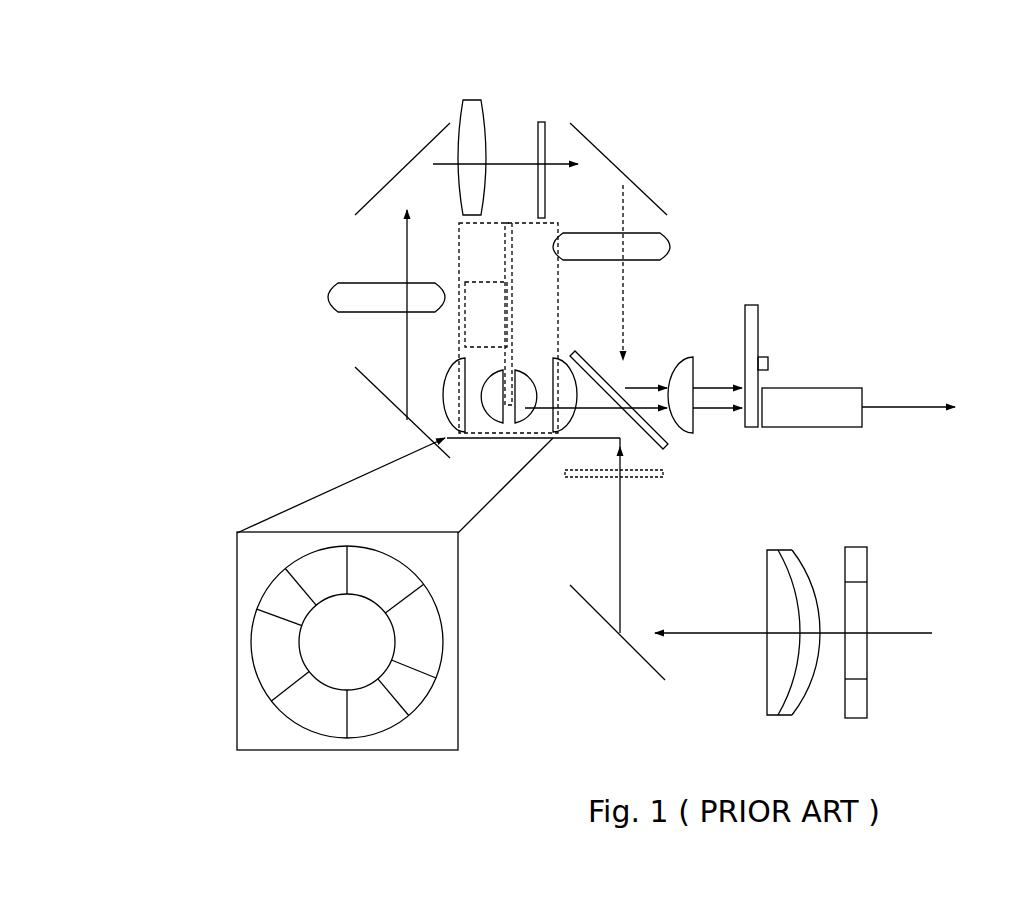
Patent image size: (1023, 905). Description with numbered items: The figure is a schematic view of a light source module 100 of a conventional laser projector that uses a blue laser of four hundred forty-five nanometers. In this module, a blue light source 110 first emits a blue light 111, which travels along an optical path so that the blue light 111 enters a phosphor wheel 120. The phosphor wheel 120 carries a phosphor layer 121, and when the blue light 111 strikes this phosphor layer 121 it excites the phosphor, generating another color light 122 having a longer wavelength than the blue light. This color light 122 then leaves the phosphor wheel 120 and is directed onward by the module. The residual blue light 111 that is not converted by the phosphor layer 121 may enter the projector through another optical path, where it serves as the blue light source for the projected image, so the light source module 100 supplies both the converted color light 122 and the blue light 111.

The light source module 100 is at (358, 85).
The blue light source 110 is at (868, 653).
The blue light 111 is at (707, 387).
The phosphor wheel 120 is at (495, 223).
The phosphor layer 121 is at (263, 638).
The color light 122 is at (722, 407).